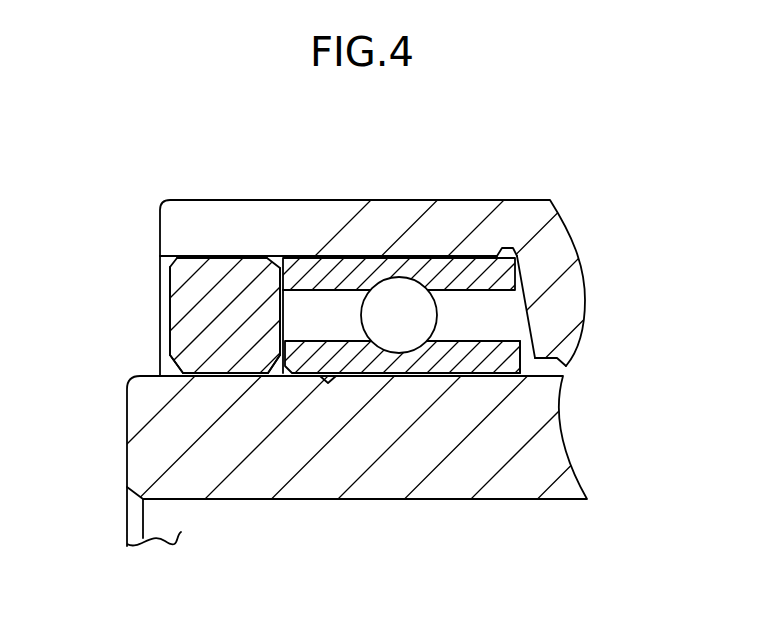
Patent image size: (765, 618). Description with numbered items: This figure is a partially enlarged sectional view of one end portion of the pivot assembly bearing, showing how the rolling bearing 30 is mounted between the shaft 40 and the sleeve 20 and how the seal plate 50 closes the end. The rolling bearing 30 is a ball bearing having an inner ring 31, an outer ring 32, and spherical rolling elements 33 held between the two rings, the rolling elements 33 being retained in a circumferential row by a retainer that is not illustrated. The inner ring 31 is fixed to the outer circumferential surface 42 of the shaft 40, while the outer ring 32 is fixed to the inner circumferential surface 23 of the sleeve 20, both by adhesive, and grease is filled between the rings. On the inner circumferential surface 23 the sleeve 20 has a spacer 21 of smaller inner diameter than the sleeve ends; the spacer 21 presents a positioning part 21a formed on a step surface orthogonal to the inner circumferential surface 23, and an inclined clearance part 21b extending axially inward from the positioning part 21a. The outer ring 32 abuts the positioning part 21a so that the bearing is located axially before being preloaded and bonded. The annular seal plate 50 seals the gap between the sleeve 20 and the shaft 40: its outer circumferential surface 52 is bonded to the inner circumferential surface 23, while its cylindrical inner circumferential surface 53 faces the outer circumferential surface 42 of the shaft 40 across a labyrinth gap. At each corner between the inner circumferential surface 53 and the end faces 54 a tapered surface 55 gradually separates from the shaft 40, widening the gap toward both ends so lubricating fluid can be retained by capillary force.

The sleeve 20 is at (418, 189).
The spacer 21 is at (563, 362).
The positioning part 21a is at (501, 256).
The inclined clearance part 21b is at (522, 300).
The inner circumferential surface 23 is at (180, 259).
The rolling bearing 30 is at (446, 352).
The inner ring 31 is at (363, 362).
The outer ring 32 is at (323, 262).
The rolling elements 33 is at (437, 315).
The shaft 40 is at (123, 468).
The outer circumferential surface 42 is at (510, 337).
The seal plate 50 is at (168, 345).
The outer circumferential surface 52 is at (241, 258).
The inner circumferential surface 53 is at (243, 377).
The end faces 54 is at (290, 262).
The tapered surface 55 is at (168, 377).